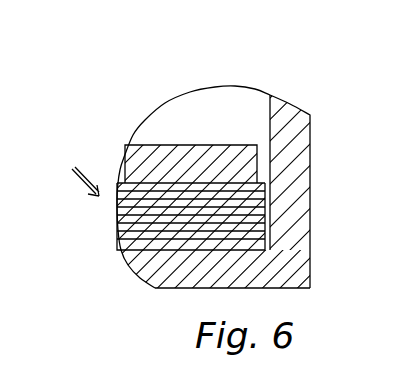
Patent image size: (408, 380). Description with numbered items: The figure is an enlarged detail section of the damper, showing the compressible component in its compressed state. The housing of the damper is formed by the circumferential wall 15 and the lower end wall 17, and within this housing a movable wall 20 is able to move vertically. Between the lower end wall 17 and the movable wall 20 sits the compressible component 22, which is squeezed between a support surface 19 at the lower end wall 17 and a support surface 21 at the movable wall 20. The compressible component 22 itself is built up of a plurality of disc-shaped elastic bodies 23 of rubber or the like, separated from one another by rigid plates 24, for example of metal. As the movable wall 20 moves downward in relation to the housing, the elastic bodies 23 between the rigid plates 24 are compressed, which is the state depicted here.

The circumferential wall 15 is at (305, 143).
The lower end wall 17 is at (295, 289).
The support surface 19 is at (258, 226).
The movable wall 20 is at (141, 160).
The support surface 21 is at (200, 186).
The compressible component 22 is at (72, 162).
The disc-shaped elastic bodies 23 is at (118, 208).
The rigid plates 24 is at (124, 240).